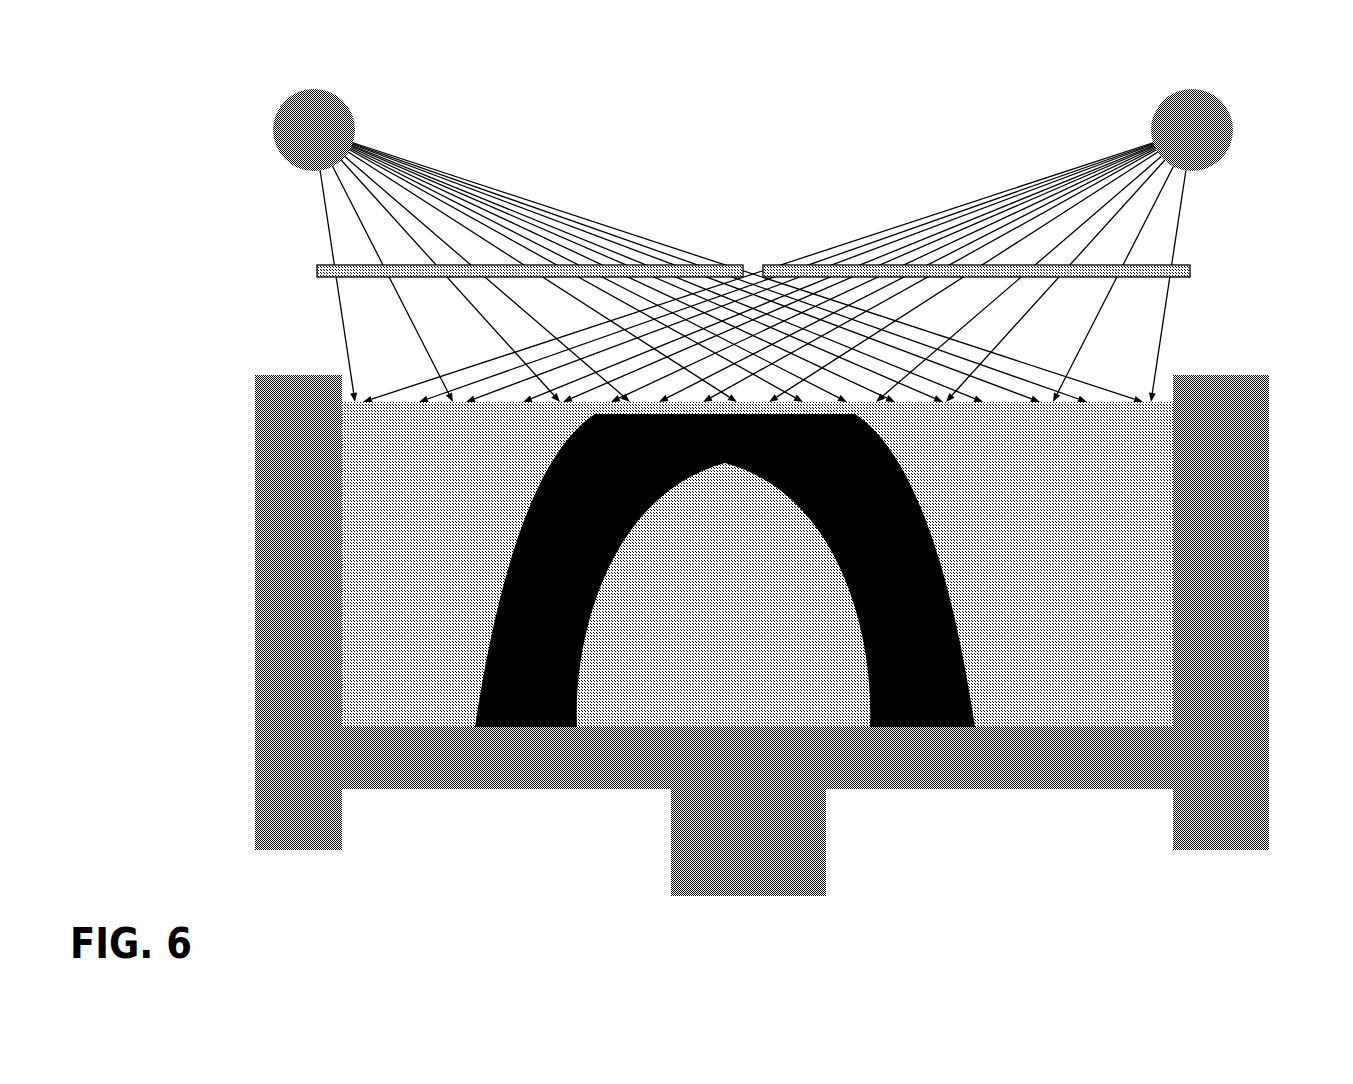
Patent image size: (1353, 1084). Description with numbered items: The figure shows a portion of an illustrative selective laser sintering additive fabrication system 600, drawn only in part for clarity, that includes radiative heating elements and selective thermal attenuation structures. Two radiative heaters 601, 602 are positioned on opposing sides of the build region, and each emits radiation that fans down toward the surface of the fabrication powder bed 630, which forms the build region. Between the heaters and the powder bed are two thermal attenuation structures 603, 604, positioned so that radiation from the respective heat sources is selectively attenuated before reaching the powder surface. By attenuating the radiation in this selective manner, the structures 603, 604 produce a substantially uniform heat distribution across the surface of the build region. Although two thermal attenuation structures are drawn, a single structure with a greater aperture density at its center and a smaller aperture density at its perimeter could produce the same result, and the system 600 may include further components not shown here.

The selective laser sintering system 600 is at (125, 63).
The radiative heater 601 is at (278, 152).
The radiative heater 602 is at (1225, 155).
The thermal attenuation structure 603 is at (308, 272).
The thermal attenuation structure 604 is at (1203, 272).
The fabrication powder bed 630 is at (398, 680).